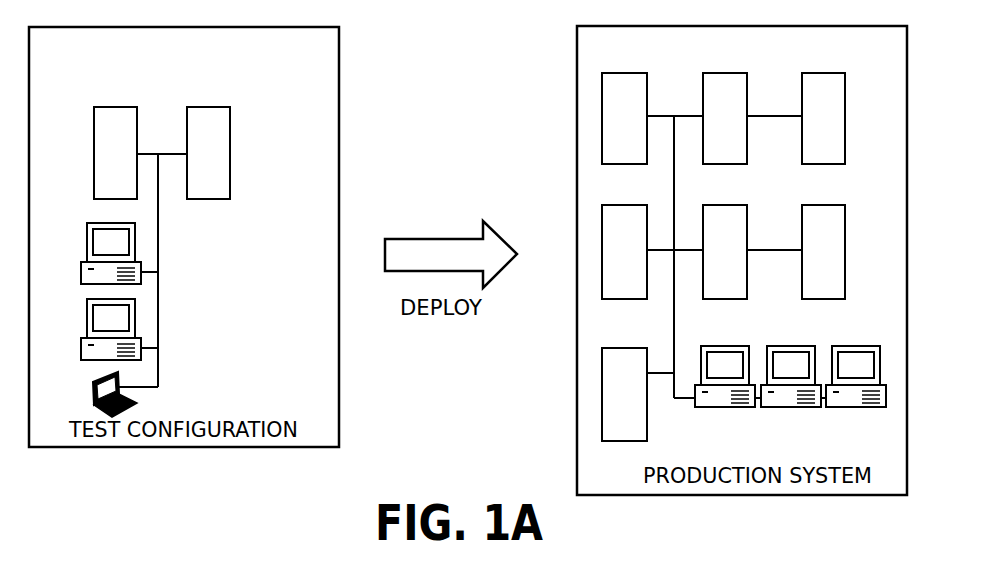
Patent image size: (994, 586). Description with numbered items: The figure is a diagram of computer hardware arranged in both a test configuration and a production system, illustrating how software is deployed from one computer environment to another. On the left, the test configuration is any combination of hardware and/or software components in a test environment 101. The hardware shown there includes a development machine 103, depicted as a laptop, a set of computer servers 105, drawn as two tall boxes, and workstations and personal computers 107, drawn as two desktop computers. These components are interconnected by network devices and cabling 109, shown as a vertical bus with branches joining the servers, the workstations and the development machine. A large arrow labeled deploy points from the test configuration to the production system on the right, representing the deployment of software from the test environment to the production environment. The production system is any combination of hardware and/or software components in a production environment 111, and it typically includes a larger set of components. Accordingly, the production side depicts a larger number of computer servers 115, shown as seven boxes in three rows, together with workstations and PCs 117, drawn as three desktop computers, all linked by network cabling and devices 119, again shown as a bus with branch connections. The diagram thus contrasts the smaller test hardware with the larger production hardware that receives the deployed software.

The test environment 101 is at (339, 102).
The development machine 103 is at (93, 400).
The computer server 105 is at (115, 107).
The workstation and personal computer 107 is at (87, 242).
The network devices and cabling 109 is at (158, 313).
The production environment 111 is at (577, 103).
The computer server 115 is at (631, 73).
The workstation and PC 117 is at (717, 347).
The network cabling and devices 119 is at (677, 399).